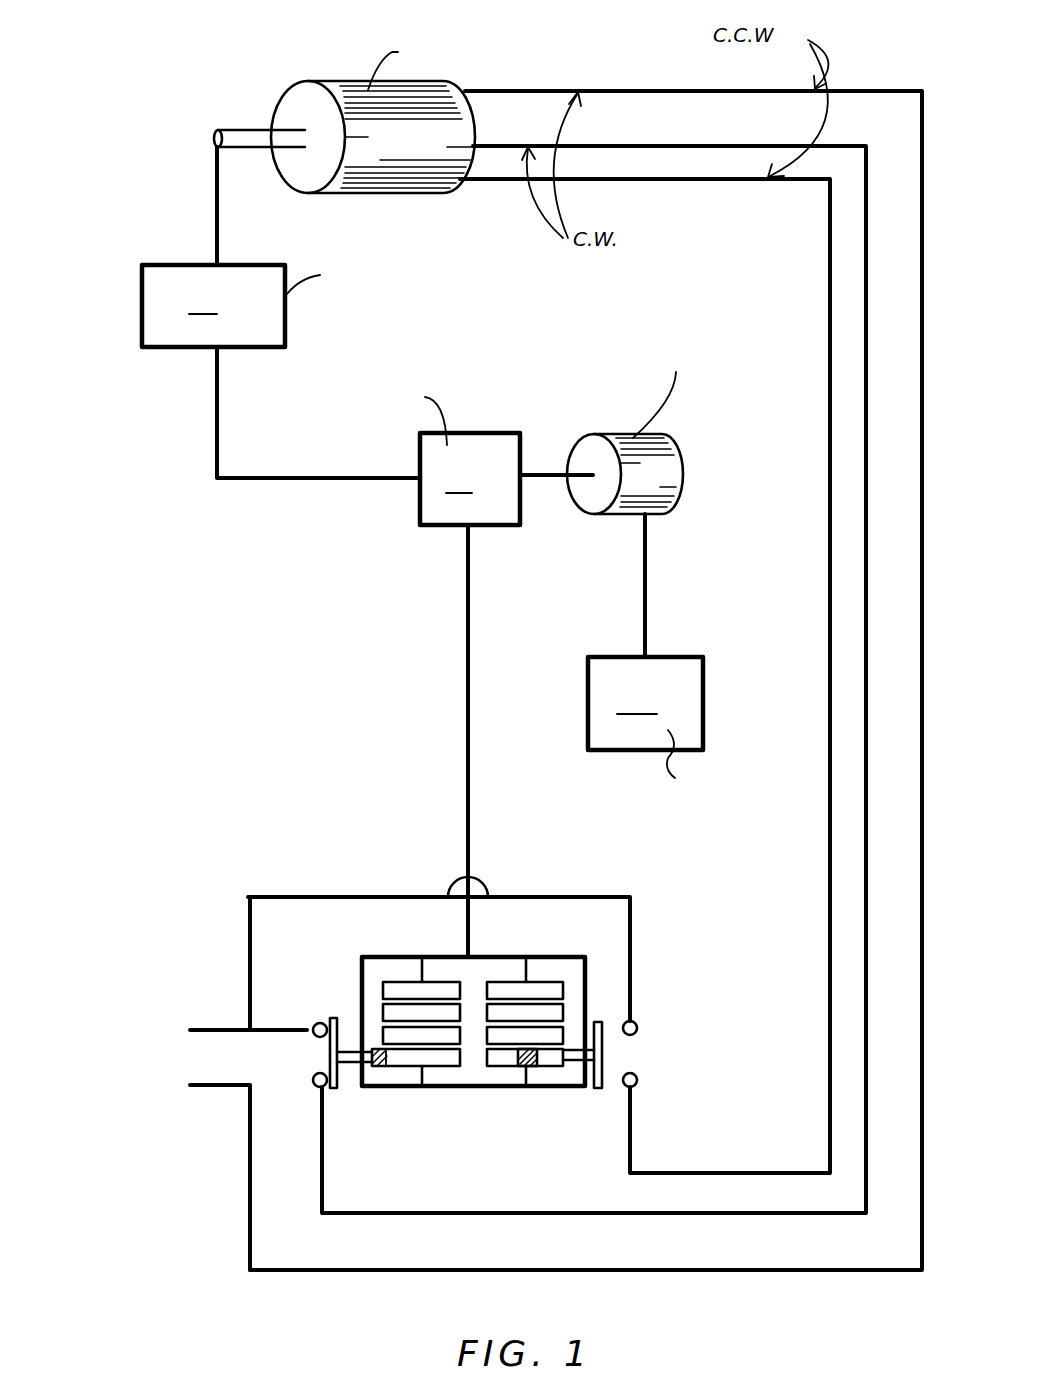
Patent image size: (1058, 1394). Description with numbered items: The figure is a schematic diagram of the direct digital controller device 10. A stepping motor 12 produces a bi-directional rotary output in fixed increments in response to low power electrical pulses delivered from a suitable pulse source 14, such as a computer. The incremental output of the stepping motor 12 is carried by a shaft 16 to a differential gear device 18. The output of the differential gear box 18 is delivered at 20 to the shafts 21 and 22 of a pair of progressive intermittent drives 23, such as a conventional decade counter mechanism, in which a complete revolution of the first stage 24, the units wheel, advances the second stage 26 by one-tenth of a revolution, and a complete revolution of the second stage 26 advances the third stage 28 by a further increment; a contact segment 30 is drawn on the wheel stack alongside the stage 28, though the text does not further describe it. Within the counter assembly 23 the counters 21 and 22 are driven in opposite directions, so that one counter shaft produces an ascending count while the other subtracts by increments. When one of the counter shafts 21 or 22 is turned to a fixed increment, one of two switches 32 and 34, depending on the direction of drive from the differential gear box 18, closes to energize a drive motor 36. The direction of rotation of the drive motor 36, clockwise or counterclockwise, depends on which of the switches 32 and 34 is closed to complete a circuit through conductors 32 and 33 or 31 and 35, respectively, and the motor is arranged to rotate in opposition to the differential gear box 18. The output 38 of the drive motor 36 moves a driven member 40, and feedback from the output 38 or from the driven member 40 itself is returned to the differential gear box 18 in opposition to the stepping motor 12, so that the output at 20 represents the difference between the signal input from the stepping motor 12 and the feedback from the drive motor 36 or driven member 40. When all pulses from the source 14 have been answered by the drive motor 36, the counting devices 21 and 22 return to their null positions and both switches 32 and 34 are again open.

The direct digital controller device 10 is at (410, 552).
The stepping motor 12 is at (665, 437).
The pulse source 14 is at (668, 737).
The shaft 16 is at (548, 478).
The differential gear device 18 is at (418, 444).
The output of the differential gear box 20 is at (471, 857).
The counter shaft 21 is at (420, 977).
The counter shaft 22 is at (524, 978).
The progressive intermittent drives 23 is at (490, 1098).
The first stage 24 is at (545, 980).
The second stage 26 is at (563, 1010).
The third stage 28 is at (538, 1036).
The conductive contact segment 30 is at (512, 1068).
The conductor 31 is at (478, 1272).
The switch 32 is at (326, 1090).
The conductor 33 is at (367, 1211).
The switch 34 is at (605, 1066).
The conductor 35 is at (666, 1170).
The drive motor 36 is at (352, 193).
The output of the drive motor 38 is at (233, 130).
The driven member 40 is at (281, 371).